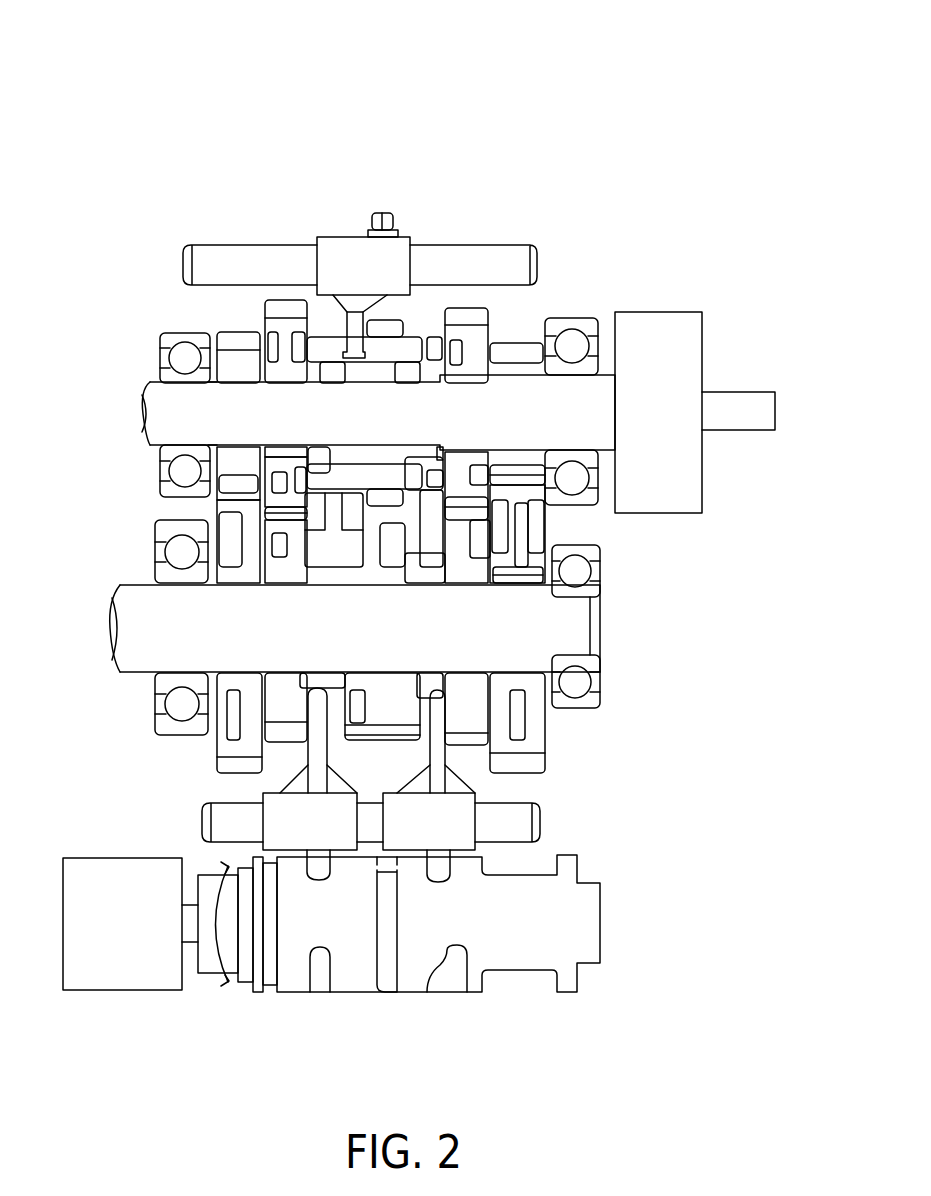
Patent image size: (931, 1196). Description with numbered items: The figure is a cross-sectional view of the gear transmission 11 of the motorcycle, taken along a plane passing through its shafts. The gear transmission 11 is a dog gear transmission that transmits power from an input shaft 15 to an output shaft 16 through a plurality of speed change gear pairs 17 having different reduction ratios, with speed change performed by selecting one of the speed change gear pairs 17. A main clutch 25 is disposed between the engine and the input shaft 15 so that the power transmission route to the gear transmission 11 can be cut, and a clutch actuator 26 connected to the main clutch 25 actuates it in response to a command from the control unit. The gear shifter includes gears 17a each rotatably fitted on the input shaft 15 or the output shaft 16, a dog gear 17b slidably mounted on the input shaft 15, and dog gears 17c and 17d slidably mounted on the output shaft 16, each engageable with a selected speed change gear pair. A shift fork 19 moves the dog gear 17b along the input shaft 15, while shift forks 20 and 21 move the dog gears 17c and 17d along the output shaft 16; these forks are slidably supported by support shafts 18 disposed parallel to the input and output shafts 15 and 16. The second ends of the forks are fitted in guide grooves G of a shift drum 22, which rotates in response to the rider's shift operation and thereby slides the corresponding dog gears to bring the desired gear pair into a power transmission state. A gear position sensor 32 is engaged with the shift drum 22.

The gear transmission 11 is at (178, 150).
The input shaft 15 is at (160, 403).
The output shaft 16 is at (130, 628).
The speed change gear pairs 17 is at (193, 318).
The gears 17a is at (490, 310).
The dog gear 17b is at (397, 305).
The dog gear 17c is at (477, 727).
The dog gear 17d is at (278, 715).
The support shafts 18 is at (538, 263).
The shift fork 19 is at (347, 258).
The shift fork 20 is at (458, 823).
The shift fork 21 is at (298, 828).
The shift drum 22 is at (478, 993).
The main clutch 25 is at (700, 488).
The clutch actuator 26 is at (748, 388).
The gear position sensor 32 is at (125, 990).
The guide grooves G is at (322, 978).